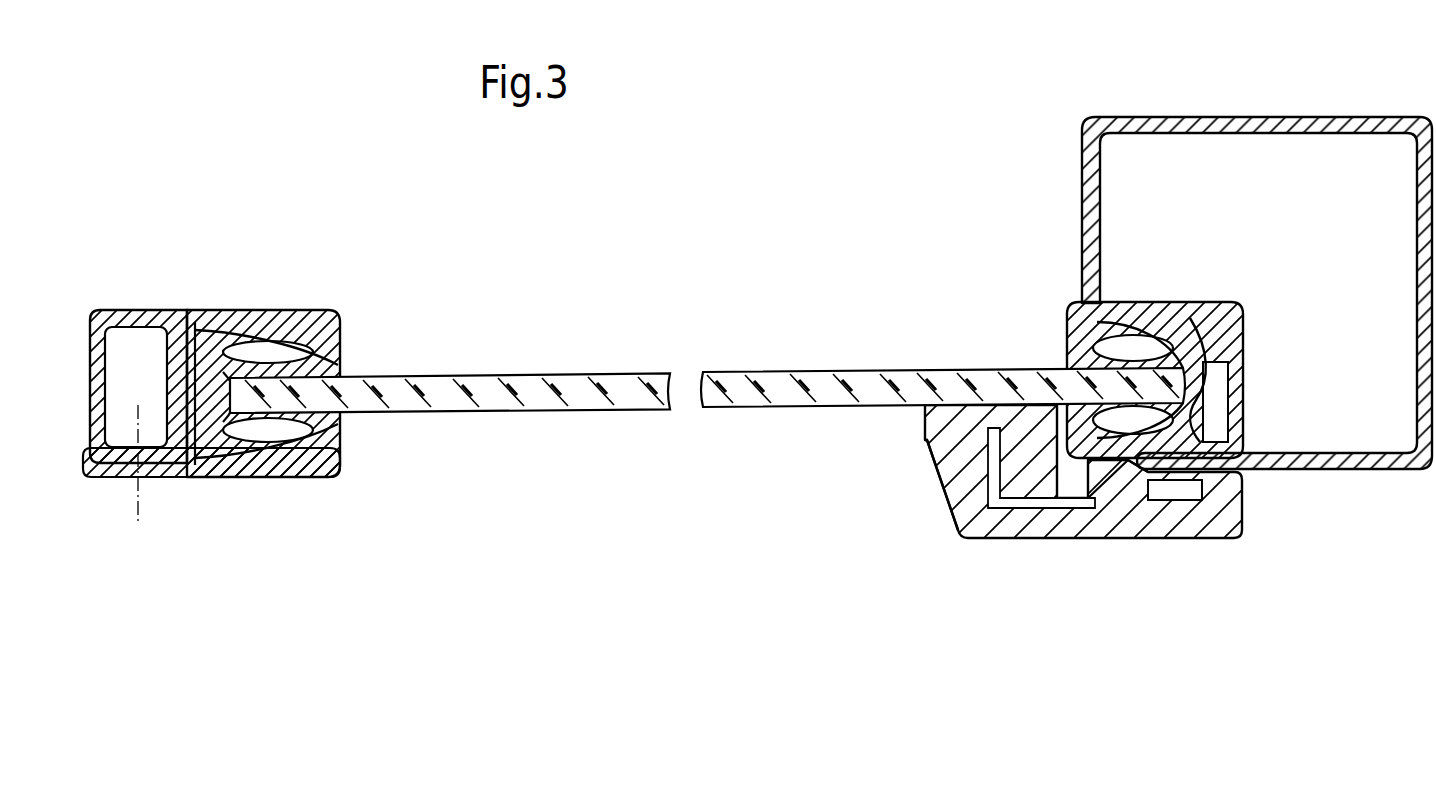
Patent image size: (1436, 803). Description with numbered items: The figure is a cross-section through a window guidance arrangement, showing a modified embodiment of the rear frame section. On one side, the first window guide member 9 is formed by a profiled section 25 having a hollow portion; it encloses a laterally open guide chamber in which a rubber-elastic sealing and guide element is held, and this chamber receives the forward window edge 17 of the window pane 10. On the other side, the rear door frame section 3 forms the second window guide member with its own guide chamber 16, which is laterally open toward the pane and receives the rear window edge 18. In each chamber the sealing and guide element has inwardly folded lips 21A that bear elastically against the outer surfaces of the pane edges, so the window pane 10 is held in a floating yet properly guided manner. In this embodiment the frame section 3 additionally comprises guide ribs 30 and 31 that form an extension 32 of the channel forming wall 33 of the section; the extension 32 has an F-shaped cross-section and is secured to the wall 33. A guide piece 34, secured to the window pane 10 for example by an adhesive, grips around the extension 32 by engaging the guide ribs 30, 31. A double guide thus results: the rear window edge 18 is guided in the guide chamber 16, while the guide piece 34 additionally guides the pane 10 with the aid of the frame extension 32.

The rear door frame section 3 is at (1080, 224).
The first window guide member 9 is at (193, 302).
The window pane 10 is at (432, 385).
The guide chamber 16 is at (1102, 338).
The forward window edge 17 is at (252, 393).
The rear window edge 18 is at (1170, 380).
The inwardly folded lips 21A is at (1123, 356).
The profiled section 25 is at (124, 312).
The guide rib 30 is at (985, 525).
The guide rib 31 is at (1153, 507).
The extension 32 is at (1107, 492).
The channel forming wall 33 is at (1163, 462).
The guide piece 34 is at (960, 540).